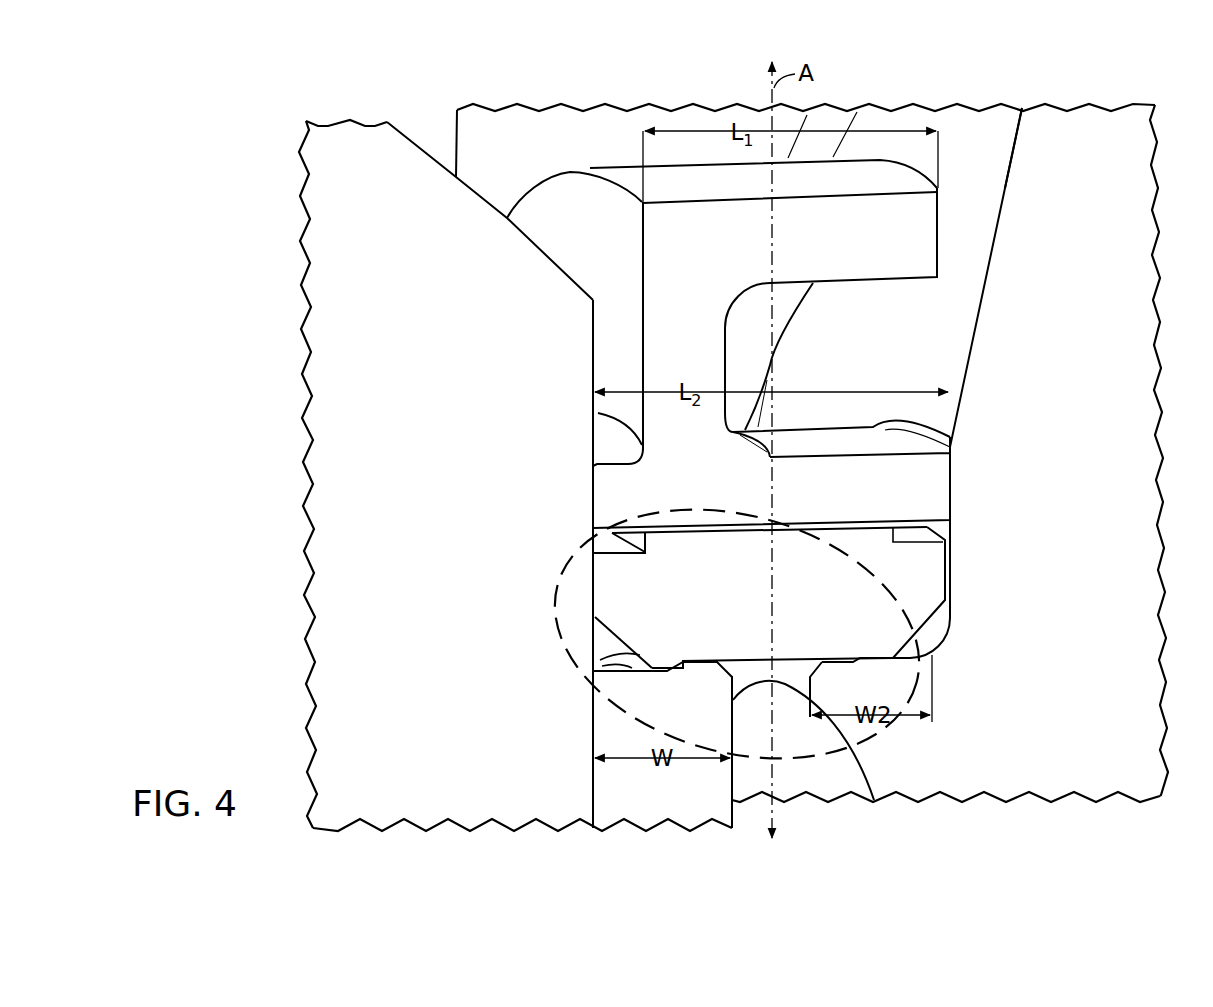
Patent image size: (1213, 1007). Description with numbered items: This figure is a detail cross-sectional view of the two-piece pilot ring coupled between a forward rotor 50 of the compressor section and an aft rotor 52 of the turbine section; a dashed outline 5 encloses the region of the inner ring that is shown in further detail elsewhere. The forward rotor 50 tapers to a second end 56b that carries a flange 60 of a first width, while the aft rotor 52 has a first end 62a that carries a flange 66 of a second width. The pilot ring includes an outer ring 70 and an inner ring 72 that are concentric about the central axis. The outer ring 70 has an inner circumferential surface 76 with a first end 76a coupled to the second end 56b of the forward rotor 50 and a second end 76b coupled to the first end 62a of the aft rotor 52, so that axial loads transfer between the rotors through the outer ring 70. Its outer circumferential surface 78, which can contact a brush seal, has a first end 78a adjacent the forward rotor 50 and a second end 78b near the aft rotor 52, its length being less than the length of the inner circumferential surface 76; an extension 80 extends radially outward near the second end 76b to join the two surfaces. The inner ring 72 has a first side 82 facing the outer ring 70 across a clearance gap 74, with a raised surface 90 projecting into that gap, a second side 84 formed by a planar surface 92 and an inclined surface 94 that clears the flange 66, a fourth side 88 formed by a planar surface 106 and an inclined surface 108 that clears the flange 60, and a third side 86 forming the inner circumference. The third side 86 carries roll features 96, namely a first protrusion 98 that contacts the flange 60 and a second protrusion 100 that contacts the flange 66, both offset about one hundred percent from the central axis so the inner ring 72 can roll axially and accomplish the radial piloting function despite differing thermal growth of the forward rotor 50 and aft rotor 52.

The forward rotor 50 is at (320, 111).
The aft rotor 52 is at (1122, 97).
The outer ring 70 is at (702, 153).
The outer circumferential surface 78 is at (641, 168).
The first end of outer circumferential surface 78a is at (641, 229).
The second end of outer circumferential surface 78b is at (938, 261).
The second end of forward rotor body 56b is at (594, 301).
The first end of aft rotor body 62a is at (1008, 186).
The extension 80 is at (620, 350).
The inner circumferential surface 76 is at (831, 524).
The first end of inner circumferential surface 76a is at (591, 482).
The second end of inner circumferential surface 76b is at (952, 500).
The first side 82 is at (609, 538).
The raised surface 90 is at (733, 527).
The inner ring 72 is at (566, 592).
The planar surface 106 is at (593, 566).
The fourth side 88 is at (590, 608).
The inclined surface 108 is at (616, 638).
The flange 60 is at (607, 661).
The clearance gap 74 is at (895, 530).
The planar surface 92 is at (946, 563).
The second side 84 is at (962, 598).
The inclined surface 94 is at (931, 630).
The flange 66 is at (931, 648).
The roll features 96 is at (845, 636).
The first protrusion 98 is at (665, 680).
The second protrusion 100 is at (875, 672).
The third side 86 is at (787, 673).
The detail region of FIG. 5 is at (900, 735).